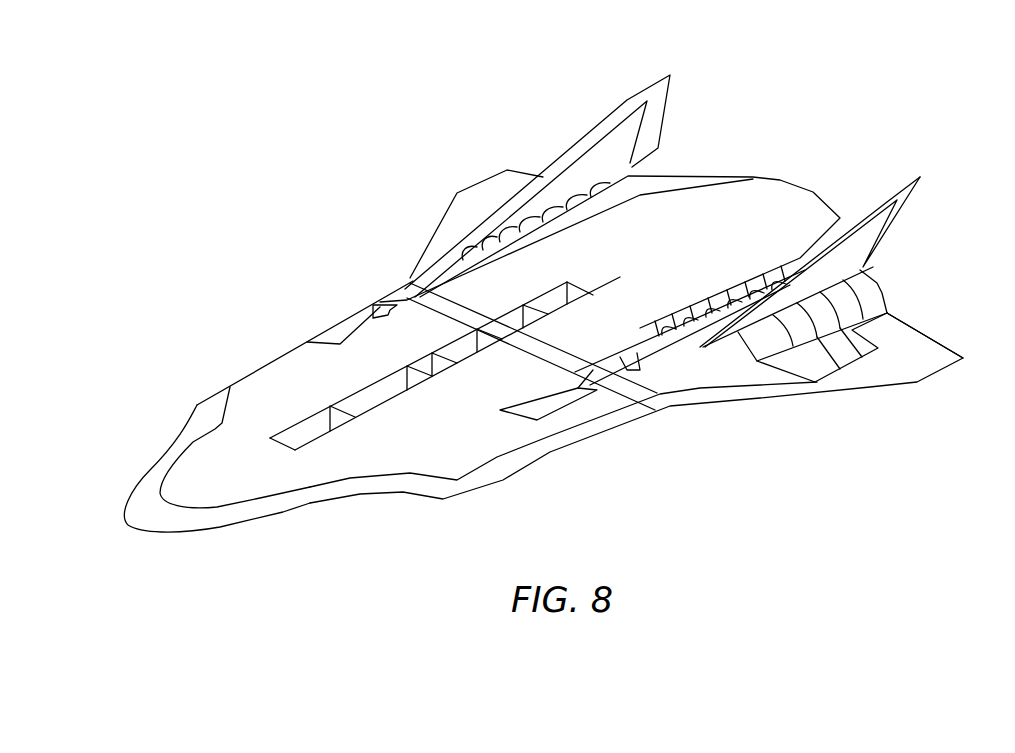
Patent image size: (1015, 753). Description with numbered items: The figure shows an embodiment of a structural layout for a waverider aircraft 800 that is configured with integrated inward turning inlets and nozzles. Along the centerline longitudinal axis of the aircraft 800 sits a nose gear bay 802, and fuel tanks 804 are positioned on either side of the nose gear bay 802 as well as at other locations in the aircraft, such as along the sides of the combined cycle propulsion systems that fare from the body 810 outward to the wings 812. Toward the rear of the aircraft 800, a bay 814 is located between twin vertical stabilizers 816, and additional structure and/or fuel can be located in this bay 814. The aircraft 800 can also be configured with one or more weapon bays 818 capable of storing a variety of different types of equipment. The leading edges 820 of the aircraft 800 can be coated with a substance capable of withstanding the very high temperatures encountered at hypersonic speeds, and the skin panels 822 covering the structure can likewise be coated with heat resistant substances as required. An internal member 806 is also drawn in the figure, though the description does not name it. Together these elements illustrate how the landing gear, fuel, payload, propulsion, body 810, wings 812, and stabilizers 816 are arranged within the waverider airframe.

The waverider aircraft 800 is at (207, 160).
The nose gear bay 802 is at (330, 427).
The fuel tanks 804 is at (487, 435).
The cross member 806 is at (522, 397).
The body 810 is at (695, 370).
The wings 812 is at (840, 377).
The bay 814 is at (760, 218).
The twin vertical stabilizers 816 is at (670, 100).
The weapon bays 818 is at (413, 298).
The leading edges 820 is at (153, 488).
The skin panels 822 is at (298, 362).